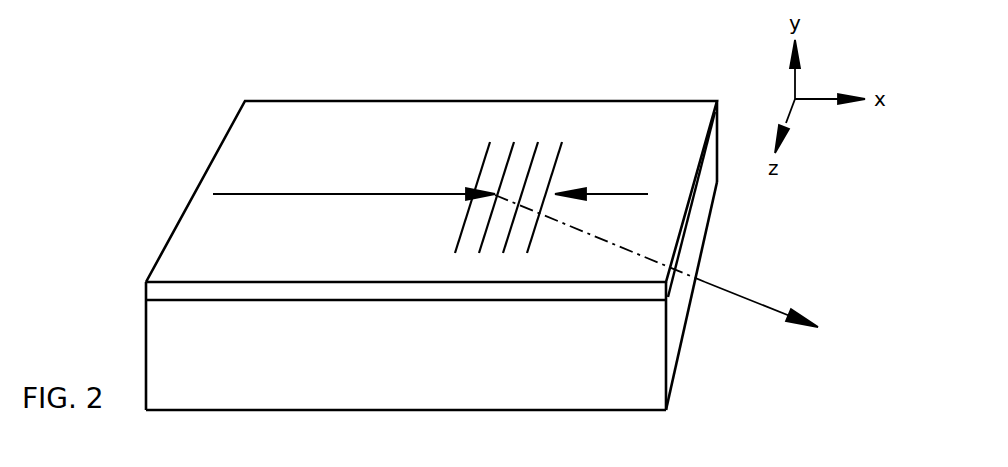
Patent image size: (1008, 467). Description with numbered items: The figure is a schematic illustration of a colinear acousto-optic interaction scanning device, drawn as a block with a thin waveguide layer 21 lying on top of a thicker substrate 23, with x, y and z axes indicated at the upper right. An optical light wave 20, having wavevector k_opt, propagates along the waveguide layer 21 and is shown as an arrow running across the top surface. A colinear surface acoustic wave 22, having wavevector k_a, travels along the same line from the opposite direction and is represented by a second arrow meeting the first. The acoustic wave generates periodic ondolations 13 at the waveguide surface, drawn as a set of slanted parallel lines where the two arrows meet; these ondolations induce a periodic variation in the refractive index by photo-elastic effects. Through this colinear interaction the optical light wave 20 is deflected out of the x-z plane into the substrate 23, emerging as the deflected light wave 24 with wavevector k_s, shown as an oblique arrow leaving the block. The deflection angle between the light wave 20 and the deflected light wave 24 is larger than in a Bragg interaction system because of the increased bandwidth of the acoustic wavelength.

The periodic ondolations 13 is at (481, 170).
The optical light wave 20 is at (323, 193).
The waveguide layer 21 is at (162, 292).
The colinear surface acoustic wave 22 is at (609, 193).
The substrate 23 is at (431, 255).
The deflected light wave 24 is at (769, 304).